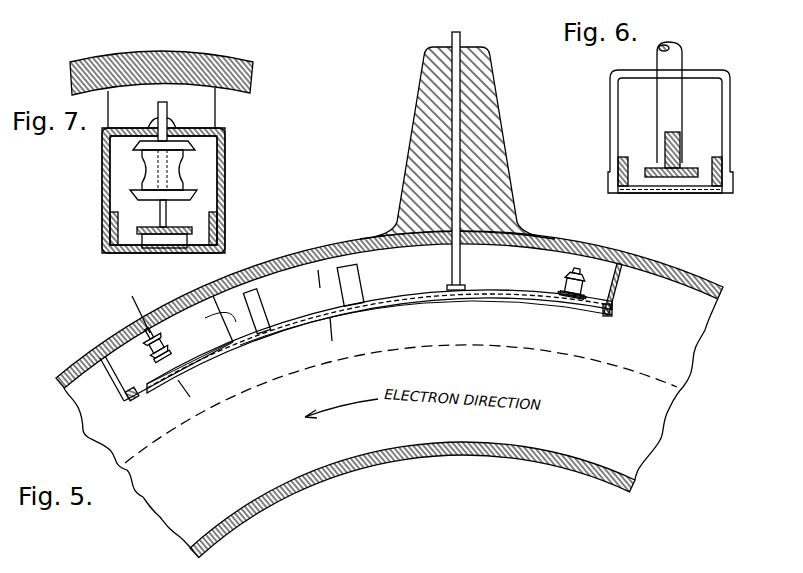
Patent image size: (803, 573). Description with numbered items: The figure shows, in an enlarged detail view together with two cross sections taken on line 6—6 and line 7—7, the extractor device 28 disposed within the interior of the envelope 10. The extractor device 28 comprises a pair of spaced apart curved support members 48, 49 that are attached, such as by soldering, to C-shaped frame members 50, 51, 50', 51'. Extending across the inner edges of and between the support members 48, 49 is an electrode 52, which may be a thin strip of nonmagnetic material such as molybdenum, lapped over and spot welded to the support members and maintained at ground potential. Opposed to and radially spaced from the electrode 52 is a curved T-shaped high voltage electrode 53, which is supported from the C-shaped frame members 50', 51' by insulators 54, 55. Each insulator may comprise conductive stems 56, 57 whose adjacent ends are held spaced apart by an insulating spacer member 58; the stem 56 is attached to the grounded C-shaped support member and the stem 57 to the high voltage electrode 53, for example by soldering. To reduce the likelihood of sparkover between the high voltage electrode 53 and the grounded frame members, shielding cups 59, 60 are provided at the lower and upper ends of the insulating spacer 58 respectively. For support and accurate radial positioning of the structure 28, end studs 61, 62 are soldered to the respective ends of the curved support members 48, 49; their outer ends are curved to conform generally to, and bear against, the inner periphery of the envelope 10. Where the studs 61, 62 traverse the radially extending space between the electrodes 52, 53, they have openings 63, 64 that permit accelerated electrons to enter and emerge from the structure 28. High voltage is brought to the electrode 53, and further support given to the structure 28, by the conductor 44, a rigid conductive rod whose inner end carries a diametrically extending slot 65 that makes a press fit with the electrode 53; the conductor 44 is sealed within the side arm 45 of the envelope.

In FIG. 5, the section line 6— 6 is at (311, 284).
In FIG. 5, the section line 7— 7 is at (137, 294).
In FIG. 5, the envelope 10 is at (98, 350).
In FIG. 7, the envelope 10 is at (252, 85).
In FIG. 5, the extractor device 28 is at (406, 333).
In FIG. 5, the conductor 44 is at (452, 37).
In FIG. 6, the conductor 44 is at (683, 56).
In FIG. 5, the side arm 45 is at (507, 142).
In FIG. 7, the curved support member 48 is at (118, 246).
In FIG. 6, the curved support member 48 is at (710, 156).
In FIG. 5, the curved support member 49 is at (584, 305).
In FIG. 7, the curved support member 49 is at (210, 246).
In FIG. 6, the curved support member 49 is at (630, 156).
In FIG. 5, the C-shaped frame member 50 is at (362, 280).
In FIG. 6, the C-shaped frame member 50 is at (685, 131).
In FIG. 5, the C-shaped frame member 50' is at (589, 279).
In FIG. 5, the C-shaped frame member 51 is at (246, 311).
In FIG. 5, the C-shaped frame member 51' is at (180, 348).
In FIG. 7, the C-shaped frame member 51' is at (182, 190).
In FIG. 5, the electrode 52 is at (210, 362).
In FIG. 6, the electrode 52 is at (676, 193).
In FIG. 5, the high voltage electrode 53 is at (152, 392).
In FIG. 7, the high voltage electrode 53 is at (176, 228).
In FIG. 6, the high voltage electrode 53 is at (688, 168).
In FIG. 5, the insulator 54 is at (566, 273).
In FIG. 5, the insulator 55 is at (156, 350).
In FIG. 7, the insulator 55 is at (208, 175).
In FIG. 7, the conductive stem 56 is at (158, 108).
In FIG. 7, the conductive stem 57 is at (160, 216).
In FIG. 7, the insulating spacer member 58 is at (146, 172).
In FIG. 7, the shielding cup 59 is at (142, 194).
In FIG. 7, the shielding cup 60 is at (135, 145).
In FIG. 5, the end stud 61 is at (109, 382).
In FIG. 7, the end stud 61 is at (216, 116).
In FIG. 5, the end stud 62 is at (622, 294).
In FIG. 5, the opening 63 is at (127, 404).
In FIG. 7, the opening 63 is at (163, 248).
In FIG. 5, the opening 64 is at (617, 315).
In FIG. 6, the slot 65 is at (674, 126).